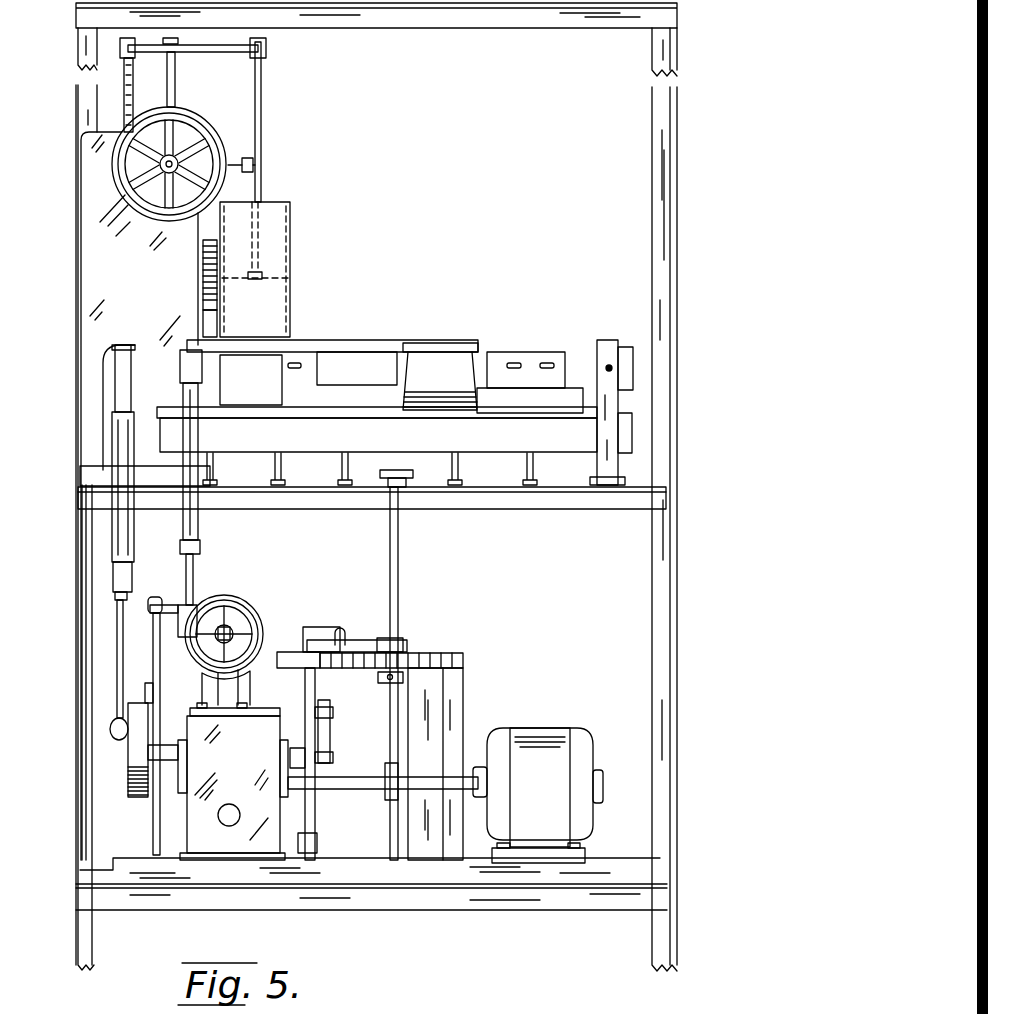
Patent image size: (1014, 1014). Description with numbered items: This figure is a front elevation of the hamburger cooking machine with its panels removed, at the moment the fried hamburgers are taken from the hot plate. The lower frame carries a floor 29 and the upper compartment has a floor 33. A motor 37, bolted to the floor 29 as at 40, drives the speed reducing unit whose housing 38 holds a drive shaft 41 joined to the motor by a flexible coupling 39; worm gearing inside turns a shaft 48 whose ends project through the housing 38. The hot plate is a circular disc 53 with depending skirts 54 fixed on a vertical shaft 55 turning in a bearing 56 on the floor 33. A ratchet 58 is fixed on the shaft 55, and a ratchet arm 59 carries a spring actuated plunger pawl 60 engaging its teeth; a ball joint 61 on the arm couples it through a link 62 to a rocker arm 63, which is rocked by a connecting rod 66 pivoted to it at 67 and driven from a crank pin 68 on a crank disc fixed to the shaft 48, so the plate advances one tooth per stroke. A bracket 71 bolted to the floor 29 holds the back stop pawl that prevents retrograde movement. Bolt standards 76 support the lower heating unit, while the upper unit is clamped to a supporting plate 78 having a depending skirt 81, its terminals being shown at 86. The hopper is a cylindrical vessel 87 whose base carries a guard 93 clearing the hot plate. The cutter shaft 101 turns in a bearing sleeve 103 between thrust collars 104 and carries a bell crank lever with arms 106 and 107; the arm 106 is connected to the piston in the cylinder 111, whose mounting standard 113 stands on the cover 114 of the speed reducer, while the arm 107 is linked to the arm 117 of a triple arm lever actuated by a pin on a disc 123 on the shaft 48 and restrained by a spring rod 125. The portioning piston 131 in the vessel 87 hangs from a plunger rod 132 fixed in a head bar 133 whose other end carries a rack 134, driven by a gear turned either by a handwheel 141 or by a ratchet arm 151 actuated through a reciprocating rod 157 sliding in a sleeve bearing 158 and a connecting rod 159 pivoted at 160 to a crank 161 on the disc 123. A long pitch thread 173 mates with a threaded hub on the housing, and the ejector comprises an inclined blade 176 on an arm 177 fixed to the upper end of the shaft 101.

The floor 29 is at (355, 876).
The floor 33 is at (549, 498).
The motor 37 is at (552, 822).
The speed reducing unit 38 is at (262, 772).
The flexible coupling 39 is at (400, 762).
The motor bolting 40 is at (590, 853).
The drive shaft 41 is at (347, 787).
The shaft 48 is at (148, 753).
The circular disc 53 is at (633, 412).
The depending skirts 54 is at (377, 429).
The vertical shaft 55 is at (390, 552).
The bearing 56 is at (408, 487).
The ratchet 58 is at (422, 658).
The ratchet arm 59 is at (355, 651).
The spring actuated plunger pawl 60 is at (313, 665).
The ball joint 61 is at (340, 638).
The link 62 is at (320, 636).
The rocker arm 63 is at (318, 803).
The connecting rod 66 is at (331, 736).
The pivot 67 is at (333, 712).
The crank pin 68 is at (333, 759).
The bracket 71 is at (450, 696).
The bolt standards 76 is at (345, 466).
The supporting plate 78 is at (370, 340).
The depending skirt 81 is at (357, 368).
The terminals 86 is at (551, 362).
The hopper 87 is at (290, 232).
The guard 93 is at (251, 380).
The shaft 101 is at (187, 574).
The bearing sleeve 103 is at (199, 521).
The thrust collar 104 is at (200, 547).
The arm 106 is at (204, 632).
The arm 107 is at (180, 607).
The cylinder 111 is at (255, 606).
The mounting standard 113 is at (238, 686).
The cover 114 is at (268, 712).
The arm 117 is at (117, 640).
The disc 123 is at (130, 785).
The spring rod 125 is at (145, 690).
The piston 131 is at (290, 278).
The plunger rod 132 is at (262, 97).
The head bar 133 is at (207, 52).
The rack 134 is at (126, 97).
The handwheel 141 is at (152, 213).
The ratchet arm 151 is at (246, 160).
The reciprocating rod 157 is at (110, 383).
The sleeve bearing 158 is at (112, 527).
The connecting rod 159 is at (116, 610).
The pivot 160 is at (113, 586).
The crank 161 is at (110, 730).
The long pitch thread 173 is at (204, 273).
The inclined blade 176 is at (440, 381).
The arm 177 is at (406, 343).